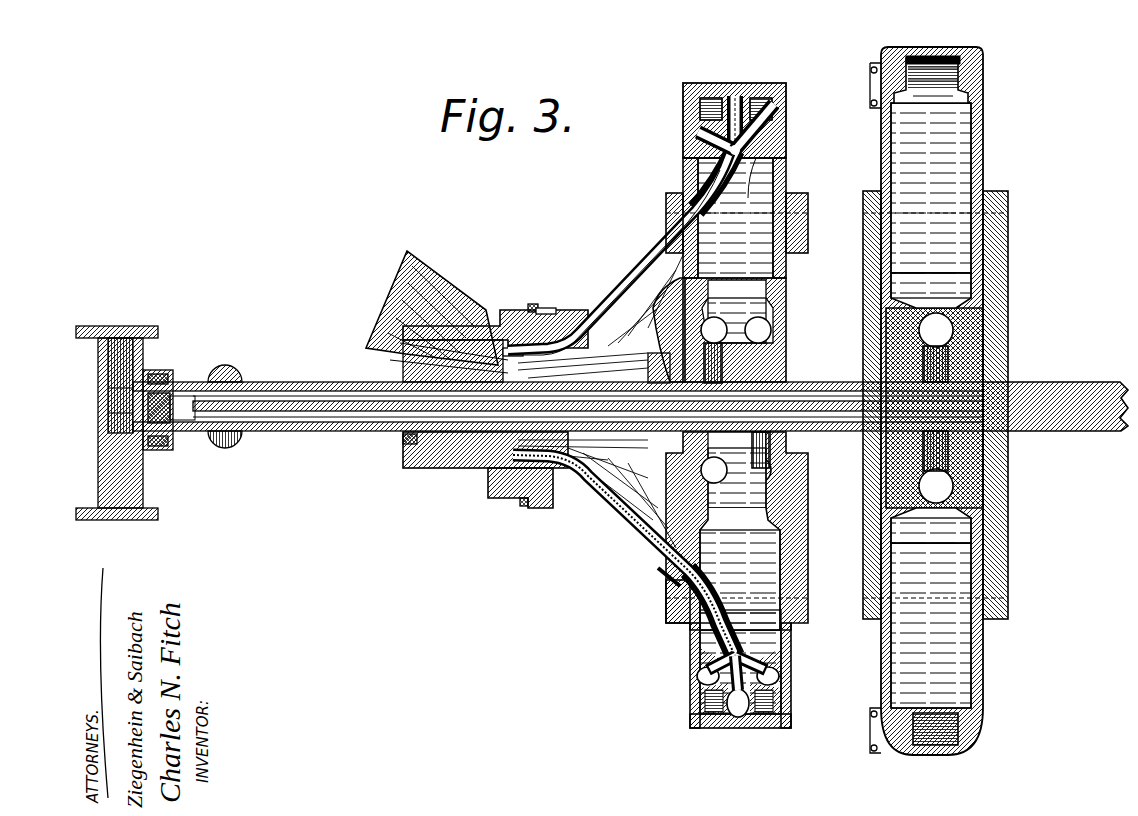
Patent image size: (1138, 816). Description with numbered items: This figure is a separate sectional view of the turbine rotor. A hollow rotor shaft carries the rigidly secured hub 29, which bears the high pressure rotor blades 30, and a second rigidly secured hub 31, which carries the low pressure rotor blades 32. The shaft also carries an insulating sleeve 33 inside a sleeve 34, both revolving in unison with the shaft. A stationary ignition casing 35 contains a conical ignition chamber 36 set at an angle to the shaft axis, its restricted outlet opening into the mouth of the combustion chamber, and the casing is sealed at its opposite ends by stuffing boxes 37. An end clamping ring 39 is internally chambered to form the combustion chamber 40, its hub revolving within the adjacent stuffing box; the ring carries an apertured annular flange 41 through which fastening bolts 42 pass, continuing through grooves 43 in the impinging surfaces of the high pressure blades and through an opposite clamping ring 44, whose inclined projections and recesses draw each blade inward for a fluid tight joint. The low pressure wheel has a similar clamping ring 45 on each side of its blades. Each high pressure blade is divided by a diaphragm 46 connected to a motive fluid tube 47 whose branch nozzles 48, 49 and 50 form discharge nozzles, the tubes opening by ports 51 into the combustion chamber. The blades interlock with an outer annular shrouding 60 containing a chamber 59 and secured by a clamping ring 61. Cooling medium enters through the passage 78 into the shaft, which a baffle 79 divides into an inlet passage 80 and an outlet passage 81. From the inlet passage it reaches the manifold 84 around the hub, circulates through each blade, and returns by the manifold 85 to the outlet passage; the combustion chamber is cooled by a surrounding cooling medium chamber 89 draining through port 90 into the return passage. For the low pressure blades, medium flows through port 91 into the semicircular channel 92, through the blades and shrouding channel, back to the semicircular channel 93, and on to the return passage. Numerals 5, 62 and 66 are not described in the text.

The propeller shaft 5 is at (1048, 422).
The hub 29 is at (780, 352).
The high pressure rotor blades 30 is at (780, 148).
The hub 31 is at (975, 345).
The low pressure rotor blades 32 is at (975, 150).
The insulating sleeve 33 is at (532, 445).
The sleeve 34 is at (460, 448).
The stationary ignition casing 35 is at (418, 456).
The ignition chamber 36 is at (412, 292).
The stuffing boxes 37 is at (398, 433).
The end clamping ring 39 is at (610, 522).
The combustion chamber 40 is at (597, 494).
The apertured annular flange 41 is at (664, 588).
The fastening bolts 42 is at (790, 210).
The grooves 43 is at (740, 669).
The clamping ring 44 is at (788, 480).
The clamping ring 45 is at (860, 262).
The diaphragm 46 is at (735, 218).
The motive fluid tube 47 is at (690, 165).
The nozzle 48 is at (735, 92).
The nozzle 49 is at (690, 126).
The nozzle 50 is at (770, 105).
The ports 51 is at (668, 230).
The chamber 59 is at (955, 52).
The outer annular shrouding 60 is at (958, 70).
The clamping ring 61 is at (870, 712).
The ball valve 62 is at (714, 316).
The upper chamber 66 is at (642, 355).
The passage 78 is at (102, 355).
The baffle 79 is at (205, 405).
The inlet passage 80 is at (296, 378).
The outlet passage 81 is at (275, 412).
The manifold 84 is at (716, 481).
The manifold 85 is at (752, 320).
The cooling medium chamber 89 is at (660, 565).
The port 90 is at (631, 511).
The port 91 is at (935, 408).
The semicircular channel 92 is at (936, 330).
The semicircular channel 93 is at (936, 486).